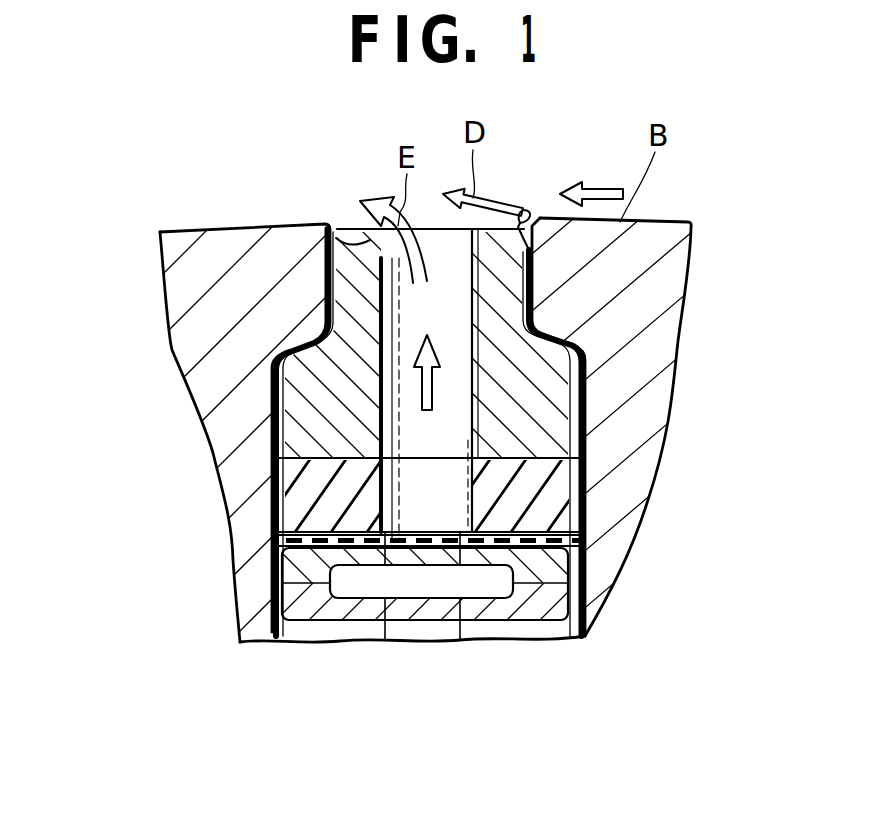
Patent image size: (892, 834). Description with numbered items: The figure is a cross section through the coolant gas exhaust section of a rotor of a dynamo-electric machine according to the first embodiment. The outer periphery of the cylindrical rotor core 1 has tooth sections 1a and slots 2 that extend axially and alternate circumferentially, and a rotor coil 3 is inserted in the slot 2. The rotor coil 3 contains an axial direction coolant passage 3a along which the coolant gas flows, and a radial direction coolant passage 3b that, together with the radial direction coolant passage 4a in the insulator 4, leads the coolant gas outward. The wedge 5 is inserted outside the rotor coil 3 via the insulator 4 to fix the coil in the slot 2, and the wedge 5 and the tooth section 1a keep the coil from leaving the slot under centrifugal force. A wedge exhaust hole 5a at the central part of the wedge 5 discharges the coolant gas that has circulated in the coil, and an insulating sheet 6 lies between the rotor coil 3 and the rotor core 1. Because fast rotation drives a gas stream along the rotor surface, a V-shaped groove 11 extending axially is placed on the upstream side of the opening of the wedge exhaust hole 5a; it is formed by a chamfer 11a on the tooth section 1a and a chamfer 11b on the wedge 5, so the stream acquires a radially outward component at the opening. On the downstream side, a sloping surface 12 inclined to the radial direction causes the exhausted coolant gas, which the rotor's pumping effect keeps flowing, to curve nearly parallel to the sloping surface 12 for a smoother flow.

The rotor core 1 is at (379, 387).
The tooth section 1a is at (620, 273).
The slot 2 is at (605, 410).
The rotor coil 3 is at (466, 621).
The axial direction coolant passage 3a is at (483, 580).
The radial direction coolant passage 3b is at (413, 552).
The insulator 4 is at (443, 487).
The radial direction coolant passage 4a is at (453, 502).
The wedge 5 is at (433, 370).
The wedge exhaust hole 5a is at (403, 393).
The insulating sheet 6 is at (573, 560).
The V-shaped groove 11 is at (559, 182).
The chamfer 11a is at (532, 214).
The chamfer 11b is at (503, 212).
The sloping surface 12 is at (332, 243).